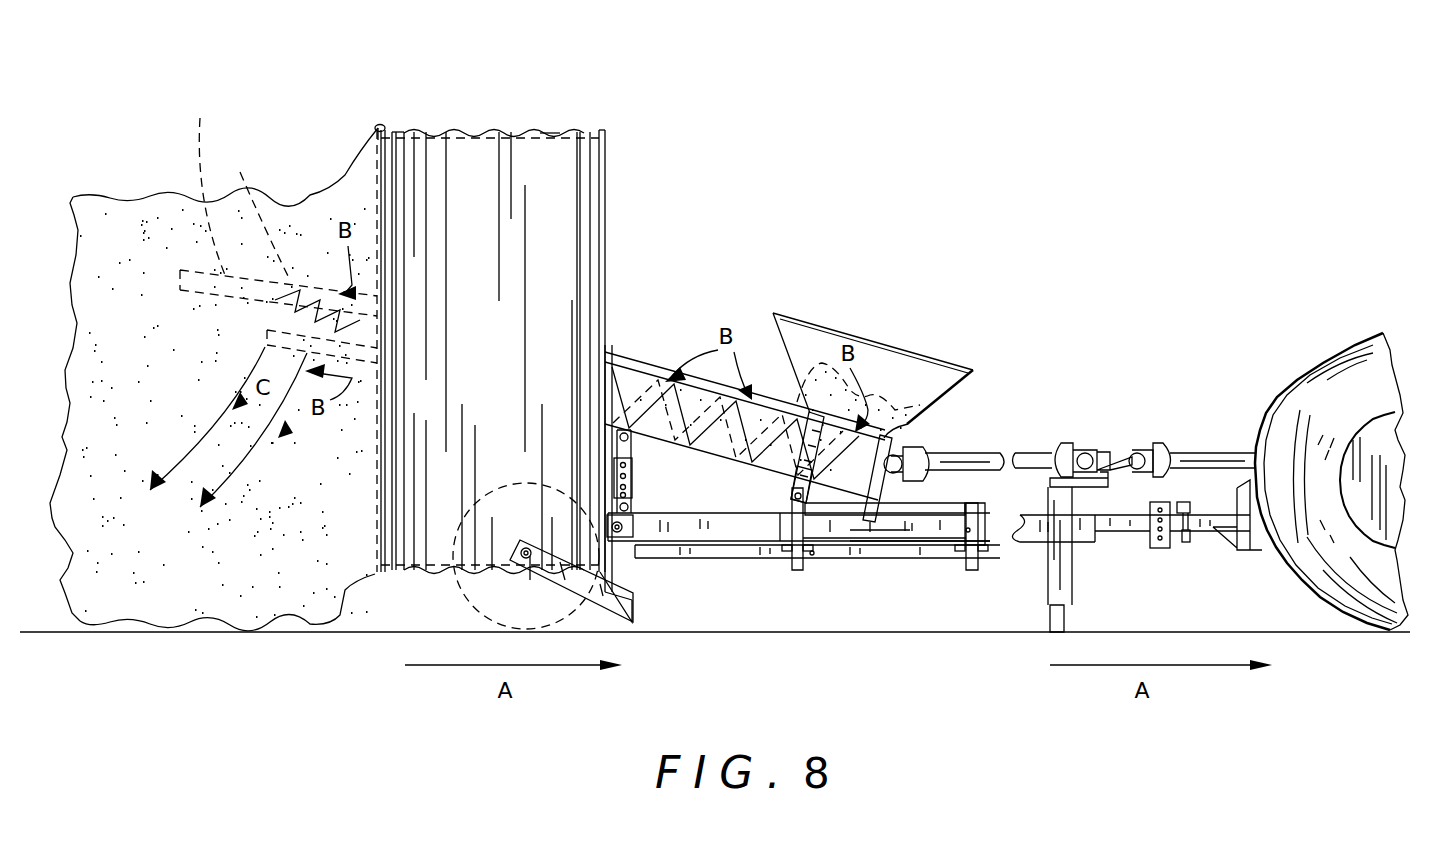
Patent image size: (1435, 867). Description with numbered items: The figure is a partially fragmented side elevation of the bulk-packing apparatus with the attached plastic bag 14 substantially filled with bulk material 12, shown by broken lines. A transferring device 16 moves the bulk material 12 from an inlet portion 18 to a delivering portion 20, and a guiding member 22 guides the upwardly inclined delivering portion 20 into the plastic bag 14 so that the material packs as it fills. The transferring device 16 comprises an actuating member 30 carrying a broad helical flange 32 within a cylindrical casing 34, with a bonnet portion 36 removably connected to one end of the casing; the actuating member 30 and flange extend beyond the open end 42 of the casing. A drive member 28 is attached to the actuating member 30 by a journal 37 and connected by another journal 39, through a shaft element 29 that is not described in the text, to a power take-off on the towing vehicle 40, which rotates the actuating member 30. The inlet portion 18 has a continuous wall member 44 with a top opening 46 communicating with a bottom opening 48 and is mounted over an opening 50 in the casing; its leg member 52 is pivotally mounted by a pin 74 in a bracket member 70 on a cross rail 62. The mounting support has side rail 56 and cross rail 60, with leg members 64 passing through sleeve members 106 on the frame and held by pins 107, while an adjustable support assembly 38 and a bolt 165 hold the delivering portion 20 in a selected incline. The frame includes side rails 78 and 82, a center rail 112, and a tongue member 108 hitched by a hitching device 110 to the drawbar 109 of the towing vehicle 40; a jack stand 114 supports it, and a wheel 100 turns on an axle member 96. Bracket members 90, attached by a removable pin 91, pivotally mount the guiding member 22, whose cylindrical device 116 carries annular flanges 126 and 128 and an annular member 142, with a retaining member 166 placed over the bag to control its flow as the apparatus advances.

The bulk material 12 is at (105, 215).
The plastic bag 14 is at (277, 207).
The transferring device 16 is at (650, 345).
The inlet portion 18 is at (872, 322).
The delivering portion 20 is at (688, 340).
The guiding member 22 is at (495, 95).
The drive member 28 is at (1035, 456).
The axle shaft 29 is at (1200, 452).
The actuating member 30 is at (192, 262).
The broad helical flange 32 is at (210, 183).
The cylindrical casing 34 is at (610, 360).
The bonnet portion 36 is at (306, 270).
The journal 37 is at (925, 445).
The support assembly 38 is at (634, 480).
The journal 39 is at (1093, 425).
The towing vehicle 40 is at (1305, 385).
The open end 42 is at (254, 213).
The continuous wall member 44 is at (930, 390).
The top opening 46 is at (905, 355).
The bottom opening 48 is at (920, 428).
The opening 50 is at (920, 526).
The leg member 52 is at (813, 420).
The side rail 56 is at (915, 510).
The cross rail 60 is at (980, 515).
The cross rail 62 is at (788, 518).
The leg member 64 is at (788, 553).
The bracket member 70 is at (793, 510).
The pin 74 is at (793, 495).
The side rail 78 is at (712, 537).
The side rail 82 is at (1062, 540).
The bracket member 90 is at (635, 525).
The removable pin 91 is at (618, 540).
The axle member 96 is at (530, 580).
The wheel 100 is at (460, 594).
The sleeve member 106 is at (818, 538).
The pin 107 is at (812, 555).
The tongue member 108 is at (1125, 532).
The drawbar 109 is at (1210, 522).
The hitching device 110 is at (1165, 548).
The center rail 112 is at (668, 557).
The jack stand 114 is at (1072, 590).
The cylindrical device 116 is at (555, 125).
The annular flange 126 is at (605, 132).
The annular flange 128 is at (378, 128).
The annular member 142 is at (378, 128).
The bolt 165 is at (633, 470).
The retaining member 166 is at (400, 132).